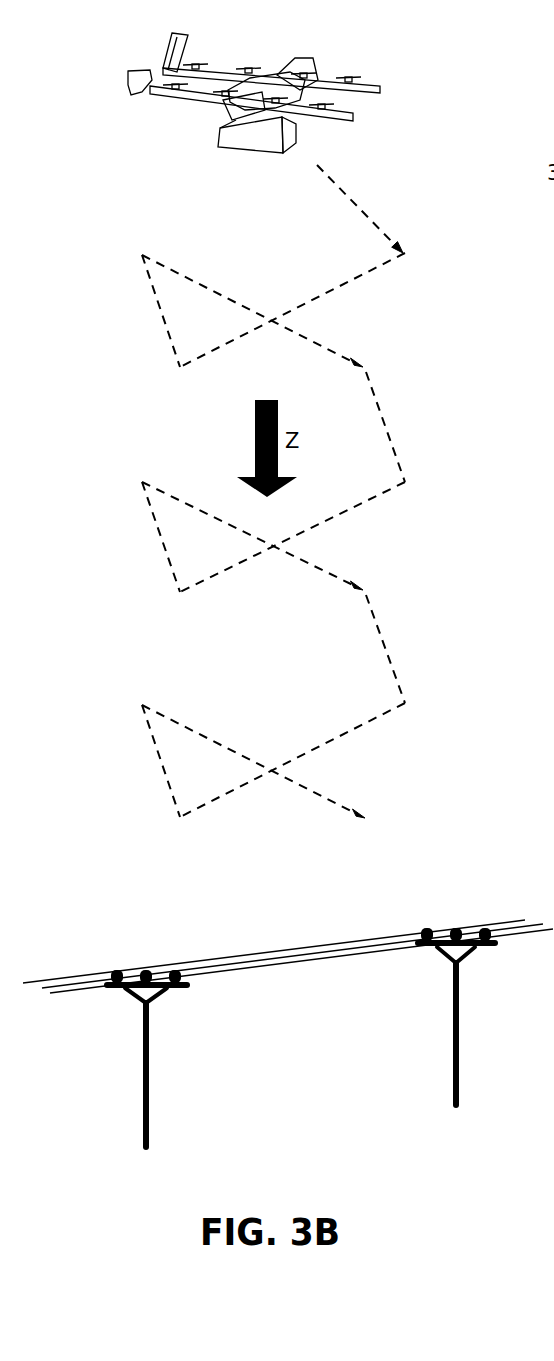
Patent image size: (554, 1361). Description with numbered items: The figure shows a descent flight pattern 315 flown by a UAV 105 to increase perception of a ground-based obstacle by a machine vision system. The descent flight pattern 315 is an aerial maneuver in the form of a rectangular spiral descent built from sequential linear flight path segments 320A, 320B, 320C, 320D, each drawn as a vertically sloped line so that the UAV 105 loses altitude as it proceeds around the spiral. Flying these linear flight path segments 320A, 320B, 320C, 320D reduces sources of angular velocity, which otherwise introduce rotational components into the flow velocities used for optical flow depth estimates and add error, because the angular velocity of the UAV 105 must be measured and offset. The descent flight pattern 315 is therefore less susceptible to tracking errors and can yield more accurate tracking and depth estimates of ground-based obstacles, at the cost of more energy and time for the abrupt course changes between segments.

The UAV 105 is at (300, 61).
The descent flight pattern 315 is at (140, 200).
The linear flight path segment 320A is at (160, 310).
The linear flight path segment 320B is at (217, 293).
The linear flight path segment 320C is at (357, 205).
The linear flight path segment 320D is at (370, 273).